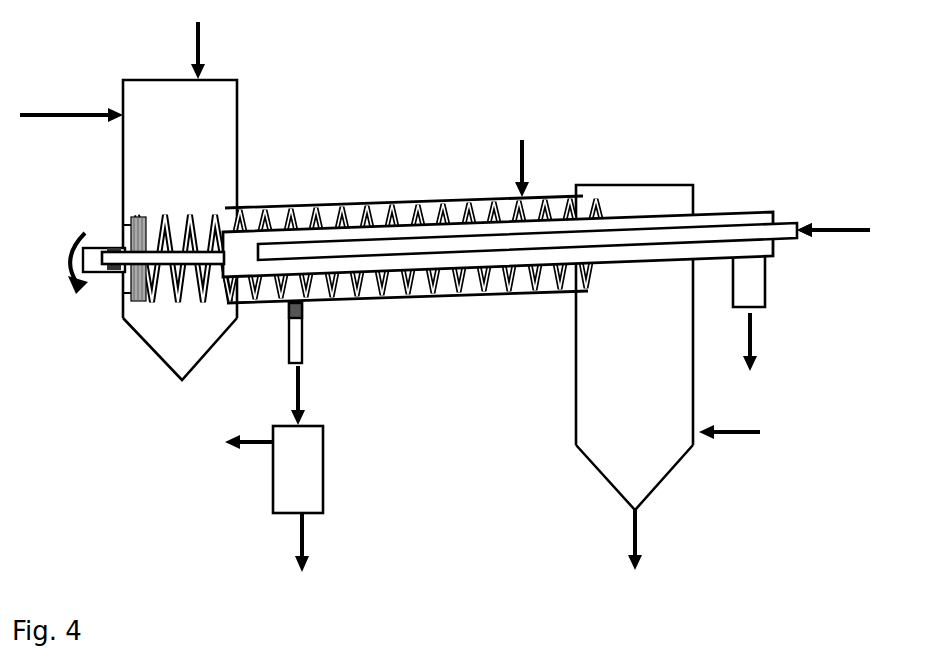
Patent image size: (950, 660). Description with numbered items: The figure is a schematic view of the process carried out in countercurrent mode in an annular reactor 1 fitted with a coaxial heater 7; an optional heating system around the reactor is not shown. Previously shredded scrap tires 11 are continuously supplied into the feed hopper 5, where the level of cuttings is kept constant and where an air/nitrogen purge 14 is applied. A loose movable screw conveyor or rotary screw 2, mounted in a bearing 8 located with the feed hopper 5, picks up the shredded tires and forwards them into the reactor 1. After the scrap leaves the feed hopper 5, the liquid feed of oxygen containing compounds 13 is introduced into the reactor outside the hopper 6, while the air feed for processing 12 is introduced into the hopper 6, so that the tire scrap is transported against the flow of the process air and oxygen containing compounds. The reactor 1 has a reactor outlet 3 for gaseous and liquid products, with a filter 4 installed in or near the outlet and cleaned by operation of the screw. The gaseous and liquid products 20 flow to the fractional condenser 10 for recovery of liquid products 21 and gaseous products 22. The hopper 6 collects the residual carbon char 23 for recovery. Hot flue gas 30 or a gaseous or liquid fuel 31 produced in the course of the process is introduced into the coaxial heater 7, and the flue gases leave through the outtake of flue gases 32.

The reactor 1 is at (358, 204).
The loose movable screw conveyor or rotary screw 2 is at (198, 275).
The reactor outlet for gaseous and liquid products 3 is at (292, 334).
The filter 4 is at (303, 320).
The feed hopper 5 is at (197, 230).
The hopper for residual carbon char 6 is at (634, 330).
The coaxial heater 7 is at (510, 224).
The bearing 8 is at (113, 272).
The (fractional) condenser 10 is at (319, 469).
The feed of shredded scrap tires 11 is at (71, 96).
The air feed for processing 12 is at (751, 439).
The liquid feed of oxygen containing compound(s) 13 is at (503, 168).
The air/nitrogen purge 14 is at (219, 50).
The gaseous and liquid products 20 is at (275, 395).
The liquid products 21 is at (282, 547).
The gaseous products 22 is at (230, 449).
The residual carbon char 23 is at (661, 540).
The hot flue gas 30 is at (853, 211).
The gaseous or liquid fuel 31 is at (853, 211).
The outtake of flue gases 32 is at (764, 313).